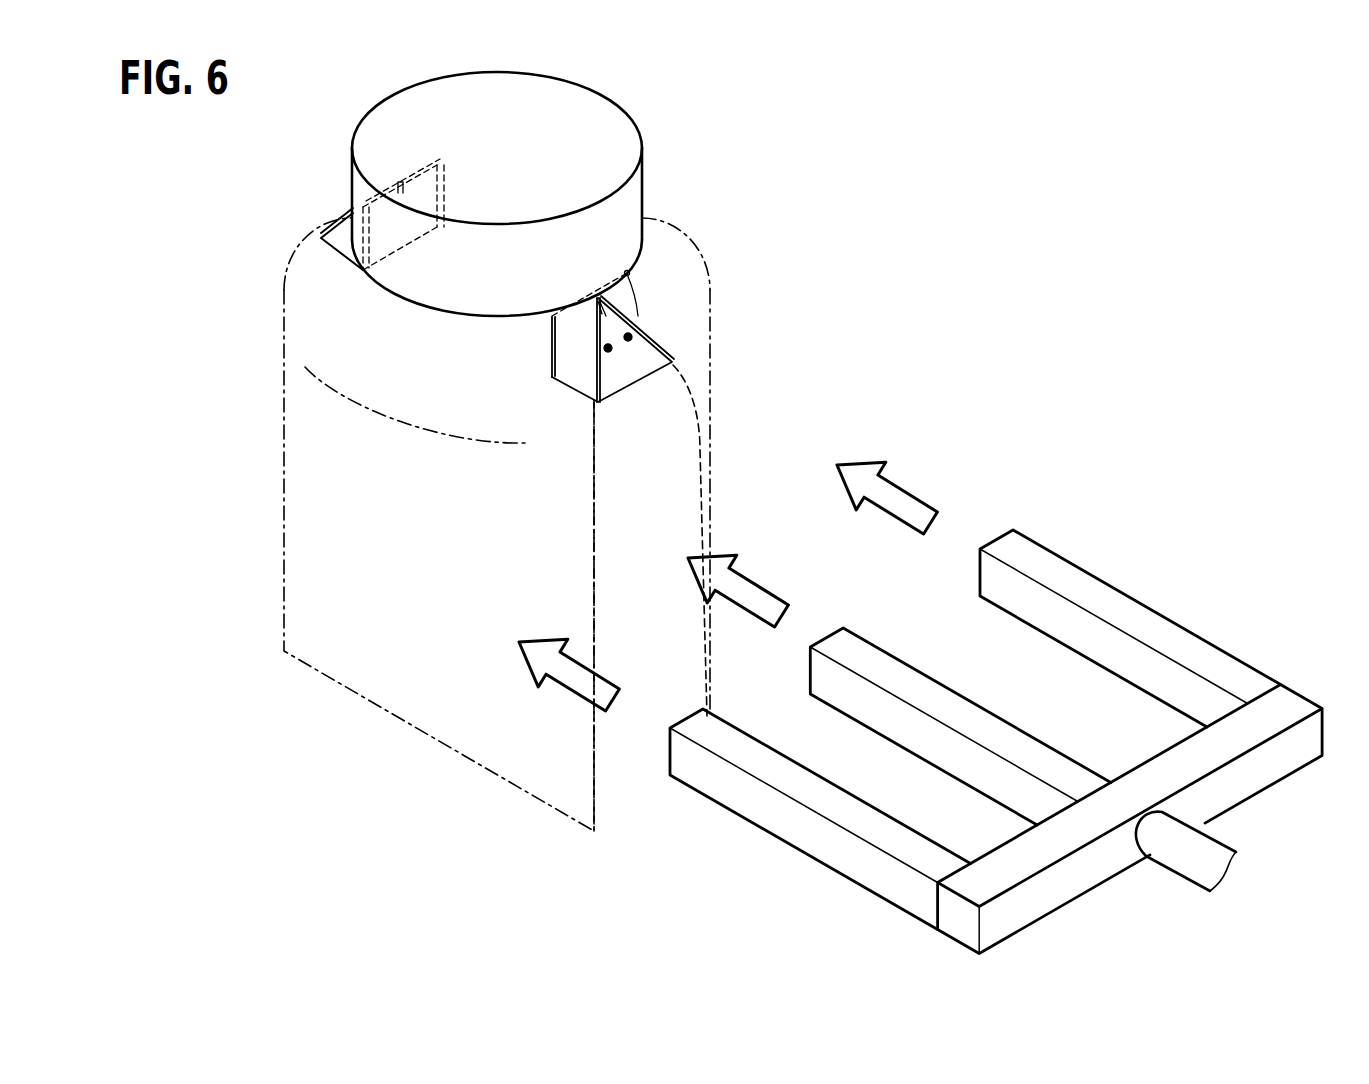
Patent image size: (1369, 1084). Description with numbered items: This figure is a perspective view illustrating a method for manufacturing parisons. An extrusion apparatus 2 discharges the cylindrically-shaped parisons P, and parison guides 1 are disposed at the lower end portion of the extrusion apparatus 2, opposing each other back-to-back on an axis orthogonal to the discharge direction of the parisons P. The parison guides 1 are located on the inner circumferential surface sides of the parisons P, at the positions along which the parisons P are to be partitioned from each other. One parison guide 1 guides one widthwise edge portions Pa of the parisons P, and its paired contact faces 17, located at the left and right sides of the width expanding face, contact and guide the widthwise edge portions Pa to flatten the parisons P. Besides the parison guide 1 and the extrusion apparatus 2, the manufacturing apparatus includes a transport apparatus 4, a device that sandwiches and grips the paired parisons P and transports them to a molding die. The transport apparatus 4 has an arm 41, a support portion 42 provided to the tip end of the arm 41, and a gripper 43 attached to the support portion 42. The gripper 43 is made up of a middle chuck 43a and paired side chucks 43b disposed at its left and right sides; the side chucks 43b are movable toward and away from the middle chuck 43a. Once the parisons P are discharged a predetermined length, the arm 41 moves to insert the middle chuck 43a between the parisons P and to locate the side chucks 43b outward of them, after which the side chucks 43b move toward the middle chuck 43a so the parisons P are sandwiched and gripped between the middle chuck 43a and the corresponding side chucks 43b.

The parison guide 1 is at (536, 333).
The extrusion apparatus 2 is at (630, 116).
The transport apparatus 4 is at (1006, 725).
The contact face 17 is at (638, 316).
The arm 41 is at (1187, 858).
The support portion 42 is at (1268, 753).
The gripper 43 is at (975, 713).
The middle chuck 43a is at (900, 636).
The side chuck 43b is at (725, 738).
The parison P is at (539, 524).
The widthwise edge portion Pa is at (594, 467).